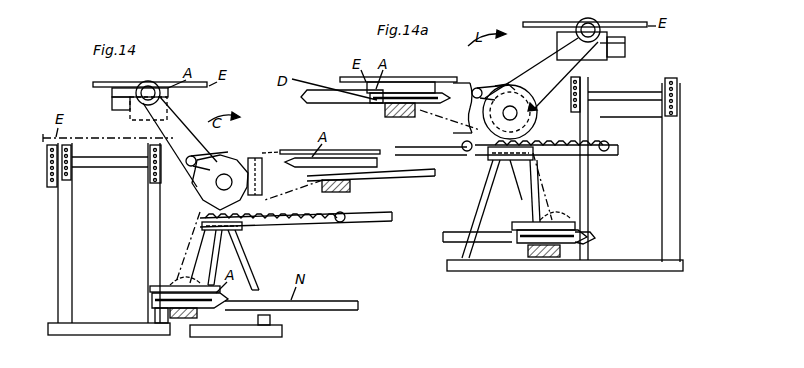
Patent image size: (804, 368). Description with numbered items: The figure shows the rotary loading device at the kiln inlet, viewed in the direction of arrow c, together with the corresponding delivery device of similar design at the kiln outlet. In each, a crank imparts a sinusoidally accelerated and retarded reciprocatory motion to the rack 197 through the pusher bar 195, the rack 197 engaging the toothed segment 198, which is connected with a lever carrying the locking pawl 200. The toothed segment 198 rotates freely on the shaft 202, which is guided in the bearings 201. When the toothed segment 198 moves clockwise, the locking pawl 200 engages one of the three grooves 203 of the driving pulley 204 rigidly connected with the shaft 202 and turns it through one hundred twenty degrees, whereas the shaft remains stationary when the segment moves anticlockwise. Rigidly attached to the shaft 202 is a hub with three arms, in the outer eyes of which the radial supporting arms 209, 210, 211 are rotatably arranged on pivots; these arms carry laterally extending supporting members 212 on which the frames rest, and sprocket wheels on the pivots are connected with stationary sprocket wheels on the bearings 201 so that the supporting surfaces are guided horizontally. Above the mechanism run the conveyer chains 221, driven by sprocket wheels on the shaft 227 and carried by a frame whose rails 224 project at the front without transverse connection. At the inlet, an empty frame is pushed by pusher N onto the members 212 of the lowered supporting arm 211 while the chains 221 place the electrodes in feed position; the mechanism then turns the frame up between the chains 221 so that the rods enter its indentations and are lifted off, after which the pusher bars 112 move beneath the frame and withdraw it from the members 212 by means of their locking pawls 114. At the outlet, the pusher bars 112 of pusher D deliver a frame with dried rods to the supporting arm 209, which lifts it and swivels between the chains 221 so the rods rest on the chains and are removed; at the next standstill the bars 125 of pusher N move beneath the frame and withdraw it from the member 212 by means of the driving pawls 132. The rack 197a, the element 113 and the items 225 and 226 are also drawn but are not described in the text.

In FIG. 14, the pusher bars 112 is at (425, 178).
In FIG. 14A, the pusher bars 112 is at (306, 97).
In FIG. 14, the plate 113 is at (299, 157).
In FIG. 14A, the locking pawls 114 is at (360, 90).
In FIG. 14, the bars 125 is at (331, 300).
In FIG. 14A, the bars 125 is at (445, 241).
In FIG. 14A, the driving pawls 132 is at (580, 236).
In FIG. 14, the pusher bar 195 is at (363, 224).
In FIG. 14A, the pusher bar 195 is at (466, 152).
In FIG. 14A, the rack 197 is at (608, 151).
In FIG. 14, the rack 197a is at (281, 226).
In FIG. 14A, the toothed segment 198 is at (555, 186).
In FIG. 14A, the locking pawl 200 is at (490, 89).
In FIG. 14A, the bearings 201 is at (478, 208).
In FIG. 14, the shaft 202 is at (226, 177).
In FIG. 14A, the shaft 202 is at (517, 114).
In FIG. 14A, the grooves 203 is at (486, 126).
In FIG. 14A, the driving pulley 204 is at (506, 88).
In FIG. 14, the supporting arm 209 is at (101, 122).
In FIG. 14A, the supporting arm 209 is at (502, 76).
In FIG. 14, the supporting arm 210 is at (348, 189).
In FIG. 14A, the supporting arm 210 is at (608, 58).
In FIG. 14, the supporting arm 211 is at (208, 310).
In FIG. 14A, the supporting arm 211 is at (549, 258).
In FIG. 14, the supporting members 212 is at (152, 305).
In FIG. 14A, the supporting members 212 is at (380, 104).
In FIG. 14, the conveyer chains 221 is at (150, 183).
In FIG. 14A, the conveyer chains 221 is at (681, 80).
In FIG. 14A, the rails 224 is at (685, 97).
In FIG. 14, the frame post 225 is at (73, 233).
In FIG. 14A, the frame post 225 is at (662, 199).
In FIG. 14A, the shaft 226 is at (627, 118).
In FIG. 14A, the shaft 227 is at (641, 91).